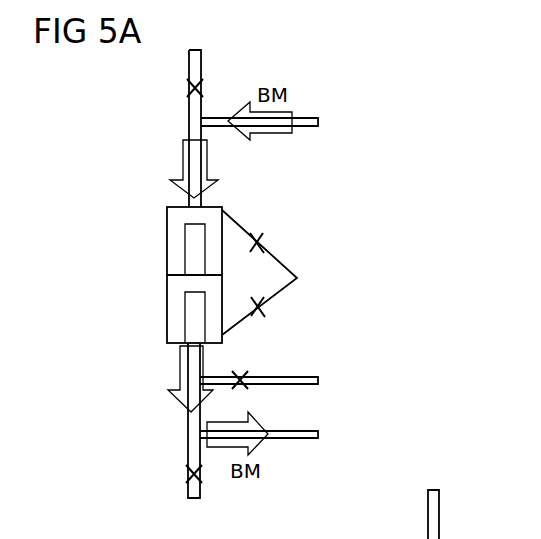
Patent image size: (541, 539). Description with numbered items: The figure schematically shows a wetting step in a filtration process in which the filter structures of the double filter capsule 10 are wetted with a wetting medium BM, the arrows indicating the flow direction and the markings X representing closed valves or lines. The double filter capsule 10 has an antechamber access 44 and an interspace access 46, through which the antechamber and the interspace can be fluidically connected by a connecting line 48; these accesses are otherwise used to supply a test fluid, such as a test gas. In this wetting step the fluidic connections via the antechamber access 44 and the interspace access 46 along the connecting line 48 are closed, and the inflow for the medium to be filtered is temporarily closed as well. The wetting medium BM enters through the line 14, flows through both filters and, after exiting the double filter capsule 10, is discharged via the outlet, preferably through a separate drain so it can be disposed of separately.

The double filter capsule 10 is at (147, 268).
The supply line 14 is at (188, 205).
The antechamber access 44 is at (223, 208).
The interspace access 46 is at (223, 336).
The connecting line 48 is at (286, 266).